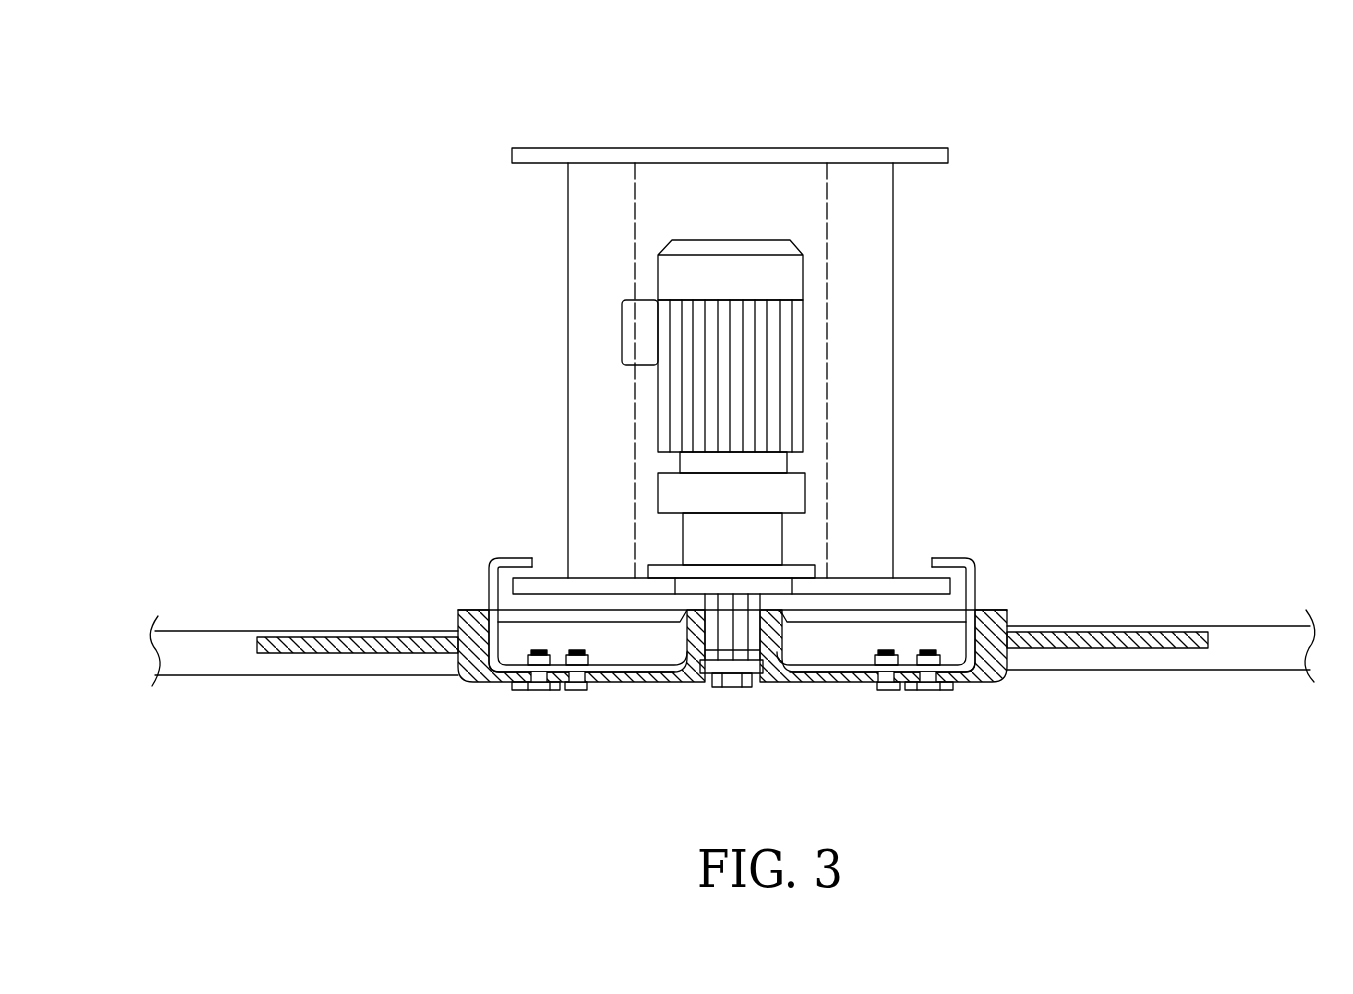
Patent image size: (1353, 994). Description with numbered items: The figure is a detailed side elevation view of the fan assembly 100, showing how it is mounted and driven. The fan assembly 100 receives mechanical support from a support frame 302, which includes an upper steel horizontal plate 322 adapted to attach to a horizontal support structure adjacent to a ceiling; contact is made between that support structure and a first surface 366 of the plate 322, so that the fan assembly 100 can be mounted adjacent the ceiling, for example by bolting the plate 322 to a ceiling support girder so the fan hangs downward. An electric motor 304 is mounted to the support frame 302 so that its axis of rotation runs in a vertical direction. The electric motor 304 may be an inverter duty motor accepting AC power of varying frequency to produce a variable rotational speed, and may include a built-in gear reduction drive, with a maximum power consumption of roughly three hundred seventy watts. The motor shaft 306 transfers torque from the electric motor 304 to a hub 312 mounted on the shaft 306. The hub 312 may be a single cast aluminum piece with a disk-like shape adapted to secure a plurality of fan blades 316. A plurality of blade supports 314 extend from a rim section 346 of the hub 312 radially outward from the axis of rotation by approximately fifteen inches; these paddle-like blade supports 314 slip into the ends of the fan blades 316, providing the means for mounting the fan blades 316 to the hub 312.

The fan assembly 100 is at (1164, 181).
The support frame 302 is at (924, 311).
The electric motor 304 is at (670, 283).
The motor shaft 306 is at (731, 688).
The hub 312 is at (480, 686).
The blade supports 314 is at (300, 655).
The fan blades 316 is at (223, 630).
The upper steel horizontal plate 322 is at (933, 145).
The rim section 346 is at (627, 683).
The first surface 366 is at (695, 148).